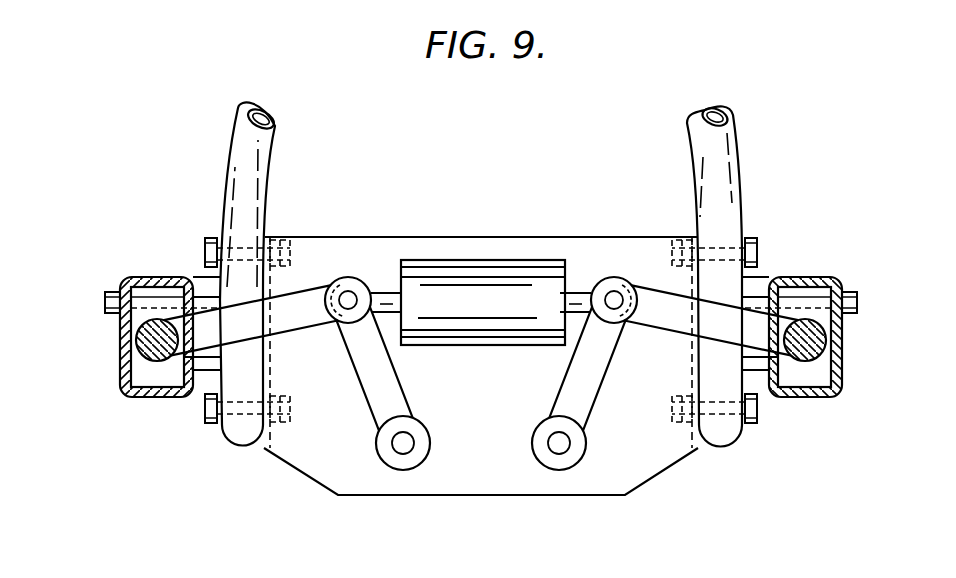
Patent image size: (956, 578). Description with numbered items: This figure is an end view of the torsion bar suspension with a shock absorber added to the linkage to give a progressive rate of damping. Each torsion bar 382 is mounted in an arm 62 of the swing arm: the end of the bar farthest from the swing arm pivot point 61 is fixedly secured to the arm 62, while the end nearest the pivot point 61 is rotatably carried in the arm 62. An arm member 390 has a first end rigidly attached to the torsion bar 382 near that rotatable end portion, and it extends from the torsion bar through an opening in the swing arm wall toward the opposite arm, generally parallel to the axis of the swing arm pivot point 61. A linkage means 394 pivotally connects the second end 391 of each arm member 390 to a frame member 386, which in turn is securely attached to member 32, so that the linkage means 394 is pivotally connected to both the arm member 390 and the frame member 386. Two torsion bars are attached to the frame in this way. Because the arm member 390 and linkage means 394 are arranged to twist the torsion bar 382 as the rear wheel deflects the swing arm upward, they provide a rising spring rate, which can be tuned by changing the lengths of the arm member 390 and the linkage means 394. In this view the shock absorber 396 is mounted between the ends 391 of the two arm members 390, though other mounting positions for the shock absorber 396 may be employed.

The member 32 is at (273, 148).
The swing arm pivot point 61 is at (103, 302).
The arm 62 is at (120, 363).
The torsion bar 382 is at (160, 362).
The frame member 386 is at (493, 482).
The arm member 390 is at (303, 322).
The second end 391 is at (338, 287).
The linkage means 394 is at (390, 380).
The shock absorber 396 is at (466, 271).